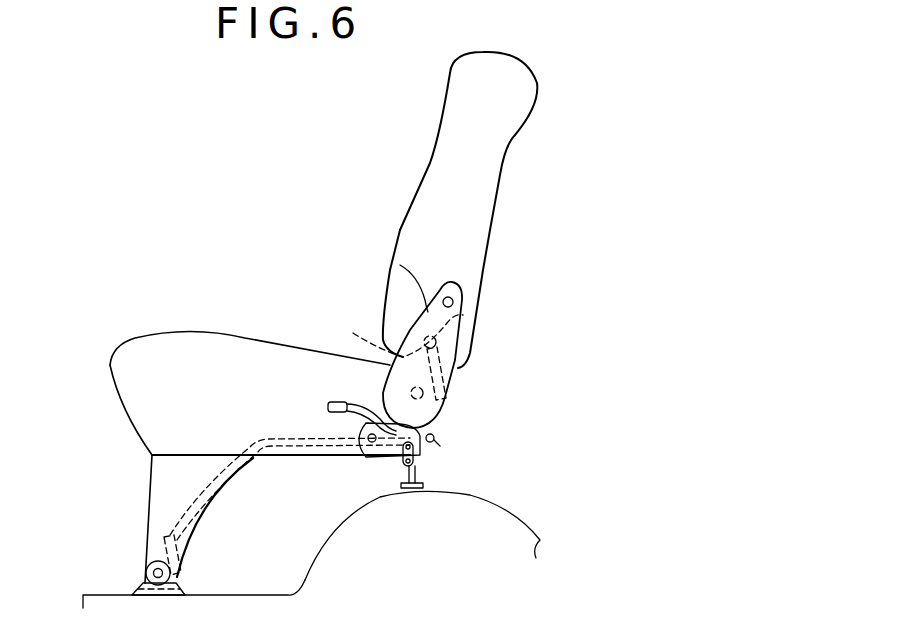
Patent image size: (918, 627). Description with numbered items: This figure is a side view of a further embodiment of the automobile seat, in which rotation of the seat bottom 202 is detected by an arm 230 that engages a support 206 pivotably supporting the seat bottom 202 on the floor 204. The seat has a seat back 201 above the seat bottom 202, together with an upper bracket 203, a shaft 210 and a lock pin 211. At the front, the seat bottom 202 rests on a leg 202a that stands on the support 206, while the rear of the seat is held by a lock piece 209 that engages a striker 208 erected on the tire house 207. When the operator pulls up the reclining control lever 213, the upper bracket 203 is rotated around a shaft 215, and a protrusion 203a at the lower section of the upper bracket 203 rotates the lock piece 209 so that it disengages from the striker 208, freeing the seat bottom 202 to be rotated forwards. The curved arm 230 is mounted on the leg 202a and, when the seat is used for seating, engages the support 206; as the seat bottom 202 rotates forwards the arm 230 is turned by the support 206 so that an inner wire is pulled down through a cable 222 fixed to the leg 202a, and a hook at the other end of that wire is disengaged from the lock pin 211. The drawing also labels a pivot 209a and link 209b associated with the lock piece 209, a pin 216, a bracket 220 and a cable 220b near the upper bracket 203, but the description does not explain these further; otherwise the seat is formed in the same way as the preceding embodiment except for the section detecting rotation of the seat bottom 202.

The seat back 201 is at (478, 176).
The seat bottom 202 is at (270, 344).
The leg 202a is at (158, 489).
The upper bracket 203 is at (400, 265).
The protrusion 203a is at (352, 430).
The floor 204 is at (223, 595).
The support 206 is at (139, 587).
The tire house 207 is at (492, 500).
The striker 208 is at (423, 486).
The lock piece 209 is at (400, 461).
The pivot pin 209a is at (440, 430).
The link 209b is at (418, 462).
The shaft 210 is at (448, 282).
The lock pin 211 is at (438, 354).
The reclining control lever 213 is at (338, 402).
The shaft 215 is at (447, 384).
The pin 216 is at (455, 412).
The bracket 220 is at (463, 315).
The cable 220b is at (384, 330).
The cable 222 is at (250, 440).
The arm 230 is at (178, 558).